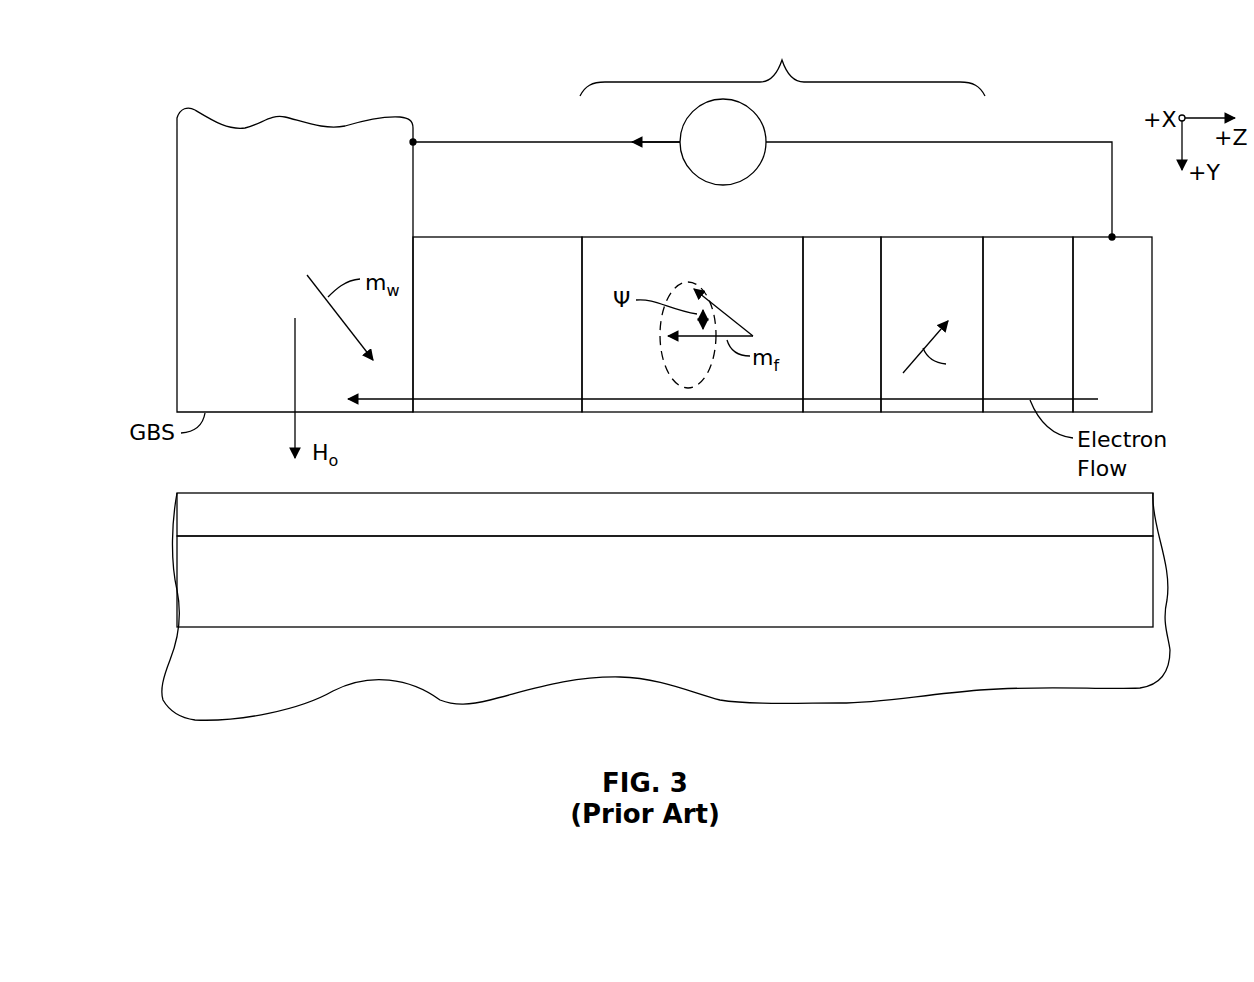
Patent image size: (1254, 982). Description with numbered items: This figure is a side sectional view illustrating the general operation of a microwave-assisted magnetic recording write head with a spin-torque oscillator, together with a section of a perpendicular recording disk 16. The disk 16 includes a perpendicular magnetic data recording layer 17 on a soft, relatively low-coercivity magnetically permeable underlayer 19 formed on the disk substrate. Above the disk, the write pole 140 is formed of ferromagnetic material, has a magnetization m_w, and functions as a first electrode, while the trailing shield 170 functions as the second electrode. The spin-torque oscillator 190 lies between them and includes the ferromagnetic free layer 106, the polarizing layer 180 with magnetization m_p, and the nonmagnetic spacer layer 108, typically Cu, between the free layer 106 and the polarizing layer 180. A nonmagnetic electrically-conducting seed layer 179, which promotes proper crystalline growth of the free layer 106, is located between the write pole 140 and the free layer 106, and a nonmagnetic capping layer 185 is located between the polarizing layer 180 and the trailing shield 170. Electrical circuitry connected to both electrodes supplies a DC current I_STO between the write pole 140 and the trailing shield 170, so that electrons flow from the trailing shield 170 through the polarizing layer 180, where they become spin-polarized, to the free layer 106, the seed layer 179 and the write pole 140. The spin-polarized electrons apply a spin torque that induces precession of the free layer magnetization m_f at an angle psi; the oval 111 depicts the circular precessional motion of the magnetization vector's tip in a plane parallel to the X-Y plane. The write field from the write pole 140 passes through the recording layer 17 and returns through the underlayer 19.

The write pole 140 is at (192, 197).
The seed layer 179 is at (482, 237).
The free layer 106 is at (608, 237).
The oval 111 is at (660, 358).
The nonmagnetic spacer layer 108 is at (818, 237).
The polarizing layer 180 is at (908, 237).
The capping layer 185 is at (1009, 237).
The trailing shield 170 is at (1098, 237).
The spin-torque oscillator 190 is at (762, 136).
The recording layer 17 is at (1135, 517).
The soft underlayer 19 is at (1133, 586).
The disk 16 is at (643, 622).